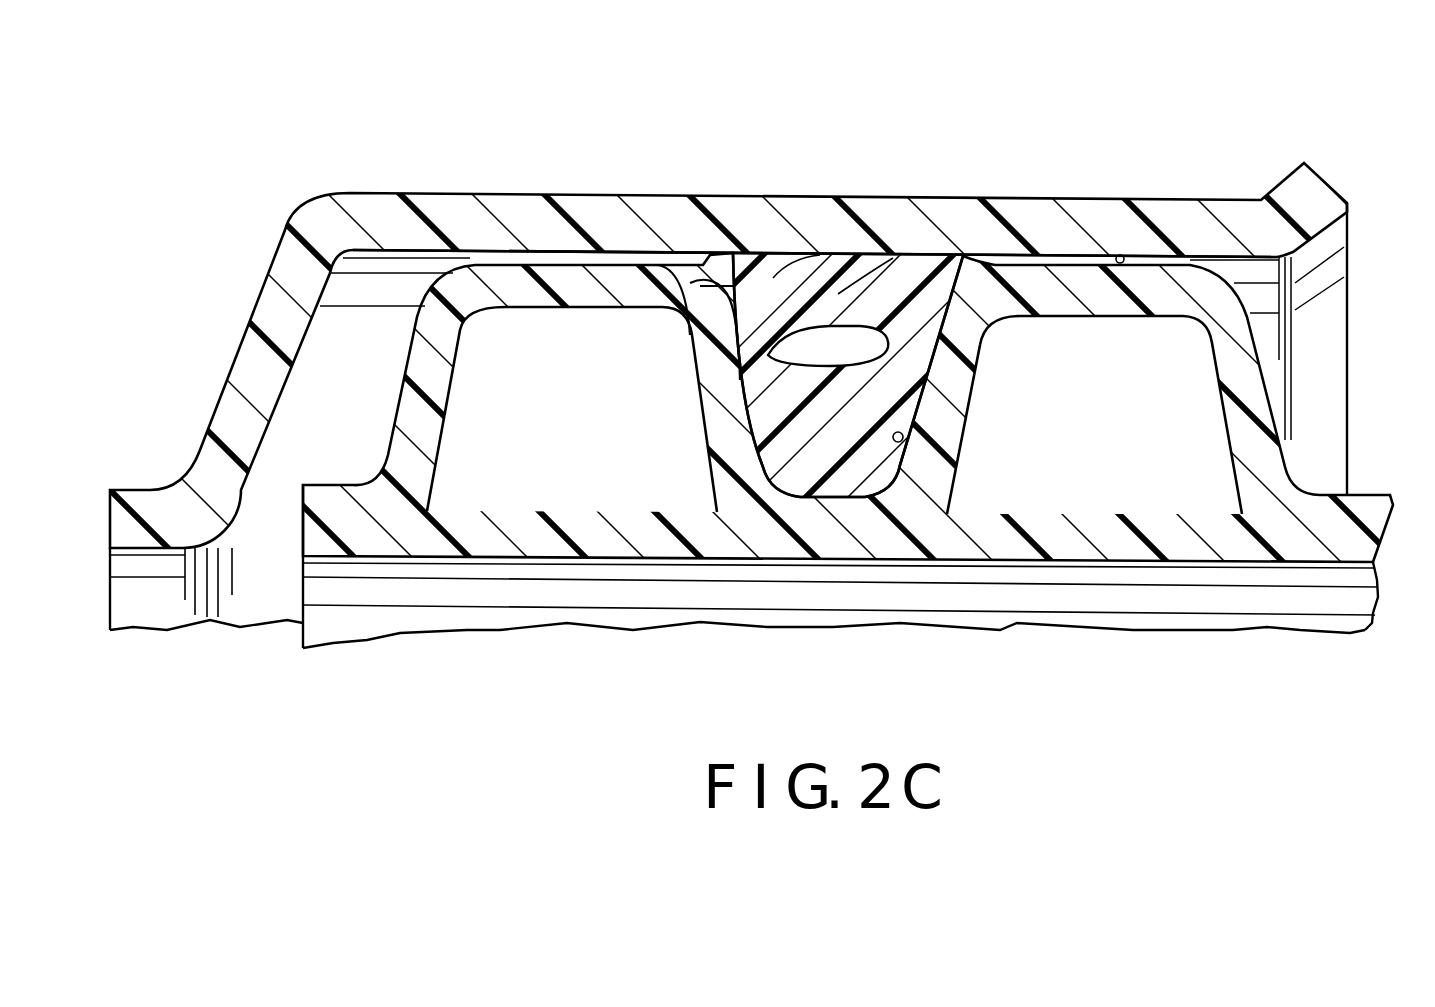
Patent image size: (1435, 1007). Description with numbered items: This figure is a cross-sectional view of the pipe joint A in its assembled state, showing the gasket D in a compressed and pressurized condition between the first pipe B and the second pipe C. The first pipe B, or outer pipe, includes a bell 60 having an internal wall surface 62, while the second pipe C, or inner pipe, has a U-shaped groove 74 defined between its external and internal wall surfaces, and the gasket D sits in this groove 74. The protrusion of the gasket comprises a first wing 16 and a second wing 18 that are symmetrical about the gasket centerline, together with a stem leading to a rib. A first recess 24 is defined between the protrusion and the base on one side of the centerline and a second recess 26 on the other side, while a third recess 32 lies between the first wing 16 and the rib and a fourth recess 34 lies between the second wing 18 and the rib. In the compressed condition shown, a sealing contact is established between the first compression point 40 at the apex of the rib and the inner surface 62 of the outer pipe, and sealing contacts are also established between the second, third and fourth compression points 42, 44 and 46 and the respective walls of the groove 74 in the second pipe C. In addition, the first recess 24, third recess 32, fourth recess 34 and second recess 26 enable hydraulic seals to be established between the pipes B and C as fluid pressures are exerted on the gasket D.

The pipe joint A is at (717, 381).
The first pipe B is at (752, 329).
The second pipe C is at (533, 598).
The gasket D is at (811, 318).
The first wing 16 is at (738, 253).
The second wing 18 is at (963, 260).
The first recess 24 is at (722, 290).
The second recess 26 is at (970, 273).
The third recess 32 is at (790, 295).
The fourth recess 34 is at (843, 293).
The first compression point 40 is at (835, 324).
The second compression point 42 is at (745, 367).
The third compression point 44 is at (910, 338).
The fourth compression point 46 is at (822, 498).
The bell 60 is at (453, 207).
The internal wall surface 62 is at (1118, 252).
The groove 74 is at (903, 436).